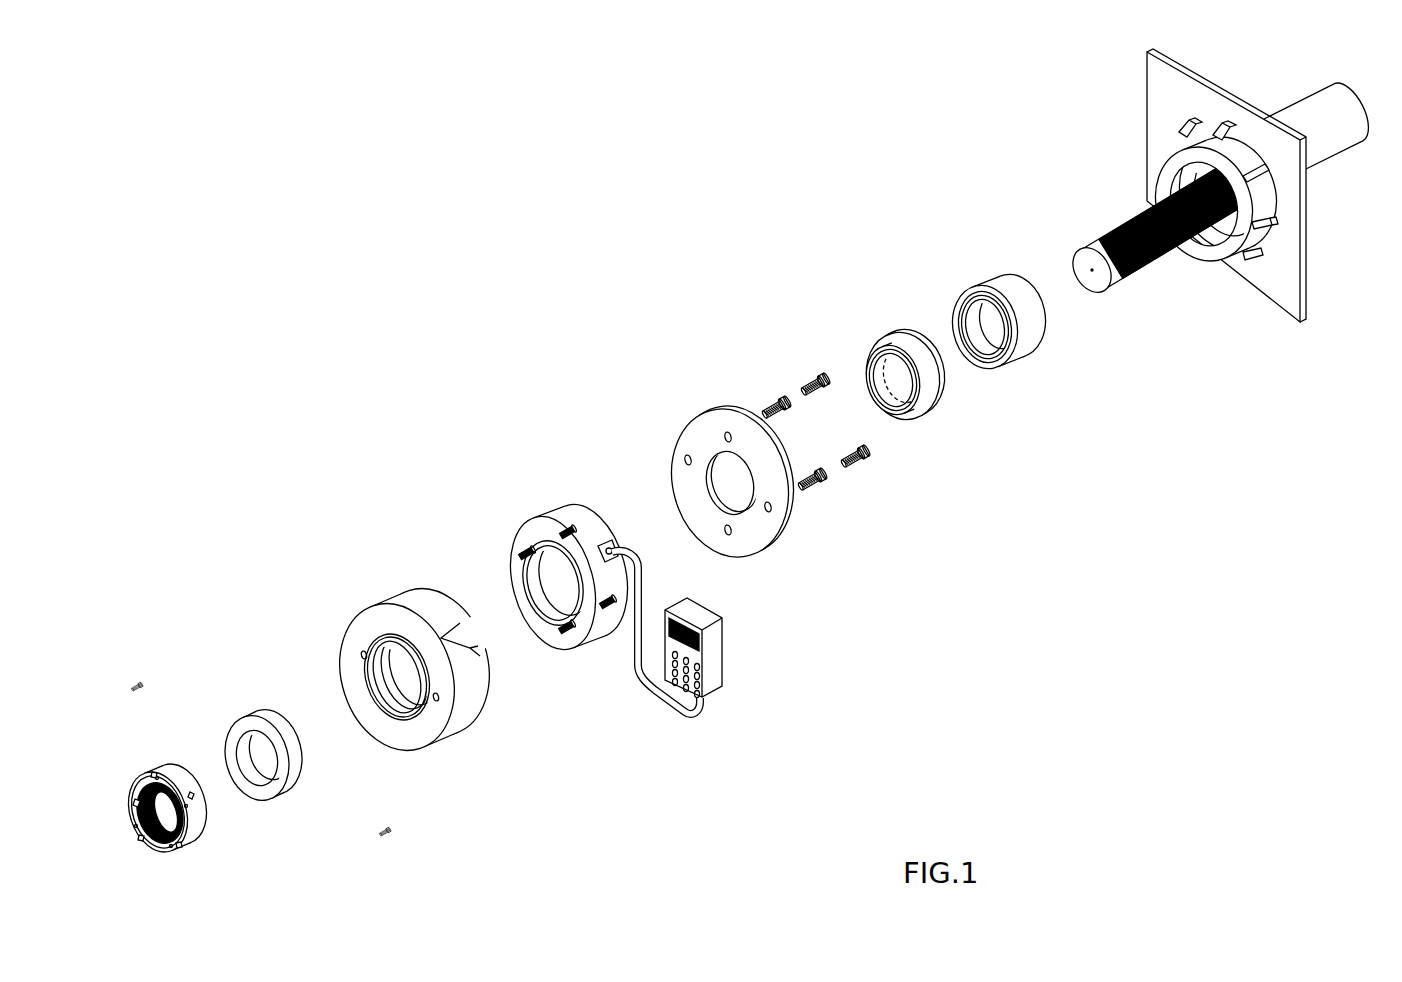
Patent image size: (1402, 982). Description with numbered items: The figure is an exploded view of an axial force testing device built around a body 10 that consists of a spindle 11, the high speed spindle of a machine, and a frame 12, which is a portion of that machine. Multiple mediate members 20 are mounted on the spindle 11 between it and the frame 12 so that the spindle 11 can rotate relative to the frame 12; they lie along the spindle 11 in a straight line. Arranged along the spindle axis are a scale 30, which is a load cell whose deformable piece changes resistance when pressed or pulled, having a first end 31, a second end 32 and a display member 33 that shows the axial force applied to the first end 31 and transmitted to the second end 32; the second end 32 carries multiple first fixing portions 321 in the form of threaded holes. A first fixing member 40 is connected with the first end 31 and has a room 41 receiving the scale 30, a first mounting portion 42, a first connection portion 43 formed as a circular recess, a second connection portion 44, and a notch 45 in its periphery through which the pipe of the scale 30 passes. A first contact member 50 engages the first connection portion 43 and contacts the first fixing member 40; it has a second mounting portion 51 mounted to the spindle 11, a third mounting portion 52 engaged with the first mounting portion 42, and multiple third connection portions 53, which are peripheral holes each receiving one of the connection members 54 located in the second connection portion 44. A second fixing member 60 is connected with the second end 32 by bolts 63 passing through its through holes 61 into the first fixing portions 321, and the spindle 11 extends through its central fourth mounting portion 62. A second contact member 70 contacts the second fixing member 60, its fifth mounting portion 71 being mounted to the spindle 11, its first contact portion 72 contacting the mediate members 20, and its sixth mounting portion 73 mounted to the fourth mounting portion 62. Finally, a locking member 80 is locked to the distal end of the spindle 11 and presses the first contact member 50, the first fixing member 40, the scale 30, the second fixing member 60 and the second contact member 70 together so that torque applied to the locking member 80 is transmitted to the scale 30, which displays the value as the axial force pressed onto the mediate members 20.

The body 10 is at (1120, 80).
The spindle 11 is at (1337, 147).
The frame 12 is at (1290, 290).
The mediate members 20 is at (977, 282).
The scale 30 is at (545, 520).
The first end 31 is at (527, 593).
The second end 32 is at (560, 512).
The first fixing portions 321 is at (583, 525).
The display member 33 is at (722, 665).
The first fixing member 40 is at (395, 595).
The room 41 is at (390, 685).
The first mounting portion 42 is at (375, 672).
The first connection portion 43 is at (362, 650).
The second connection portion 44 is at (440, 700).
The notch 45 is at (490, 670).
The first contact member 50 is at (280, 797).
The second mounting portion 51 is at (245, 750).
The third mounting portion 52 is at (268, 718).
The third connection portions 53 is at (290, 775).
The connection members 54 is at (135, 685).
The second fixing member 60 is at (692, 430).
The through holes 61 is at (770, 507).
The fourth mounting portion 62 is at (745, 510).
The bolts 63 is at (772, 405).
The second contact member 70 is at (935, 415).
The fifth mounting portion 71 is at (898, 410).
The first contact portion 72 is at (940, 395).
The sixth mounting portion 73 is at (875, 358).
The locking member 80 is at (135, 785).